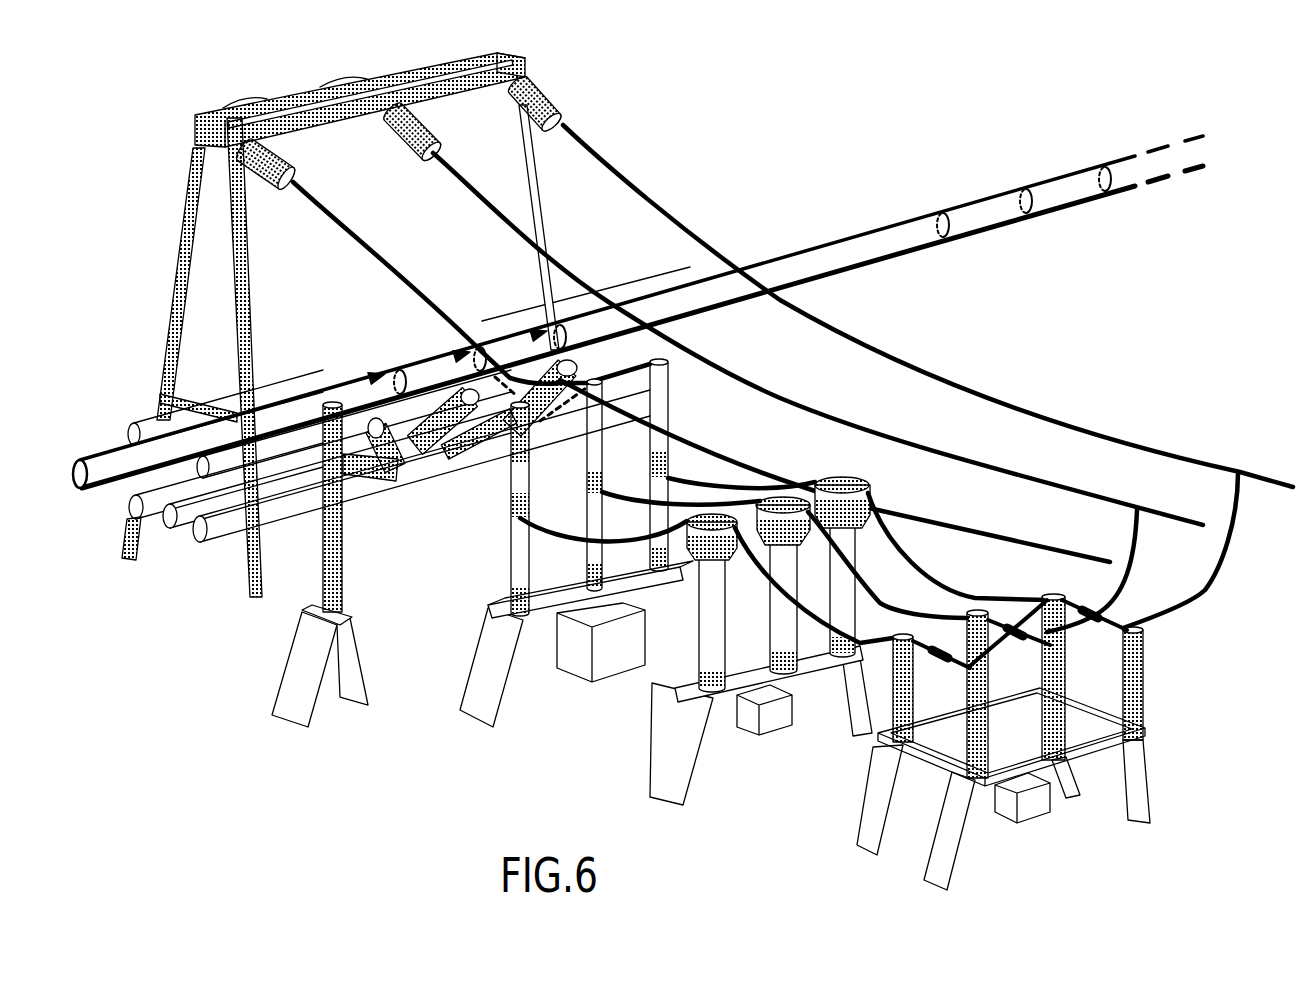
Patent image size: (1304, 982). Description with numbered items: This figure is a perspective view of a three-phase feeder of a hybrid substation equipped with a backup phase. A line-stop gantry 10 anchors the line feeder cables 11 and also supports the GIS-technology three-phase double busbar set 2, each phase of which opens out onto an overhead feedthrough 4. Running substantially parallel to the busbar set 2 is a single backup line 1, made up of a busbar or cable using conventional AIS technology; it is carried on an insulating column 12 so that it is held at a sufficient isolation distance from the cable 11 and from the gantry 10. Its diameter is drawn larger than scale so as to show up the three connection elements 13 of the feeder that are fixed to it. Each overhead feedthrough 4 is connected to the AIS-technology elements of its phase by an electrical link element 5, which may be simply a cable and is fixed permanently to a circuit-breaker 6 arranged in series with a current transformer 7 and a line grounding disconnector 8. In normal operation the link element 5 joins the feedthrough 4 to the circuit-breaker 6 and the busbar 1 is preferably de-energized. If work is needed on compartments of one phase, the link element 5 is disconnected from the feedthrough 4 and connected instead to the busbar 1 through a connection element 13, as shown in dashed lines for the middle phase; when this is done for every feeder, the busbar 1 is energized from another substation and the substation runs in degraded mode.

The backup line 1 is at (891, 262).
The busbar set 2 is at (177, 546).
The overhead feedthrough 4 is at (362, 458).
The link element 5 is at (568, 416).
The circuit-breaker 6 is at (493, 497).
The current transformer 7 is at (707, 552).
The line grounding disconnector 8 is at (935, 682).
The line-stop gantry 10 is at (182, 187).
The line feeder cable 11 is at (646, 181).
The insulating column 12 is at (312, 566).
The connection element 13 is at (532, 335).